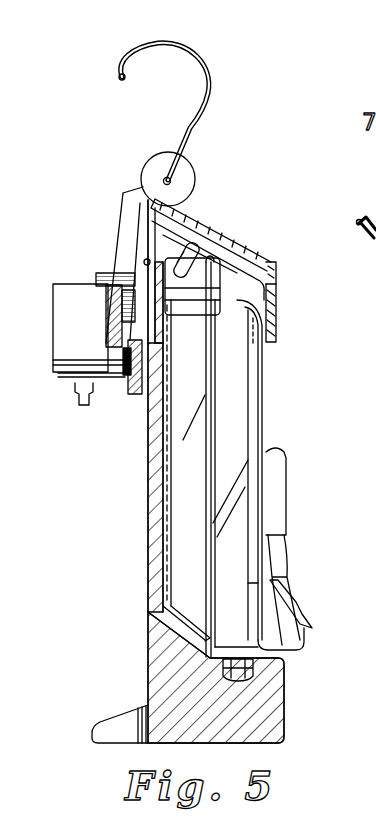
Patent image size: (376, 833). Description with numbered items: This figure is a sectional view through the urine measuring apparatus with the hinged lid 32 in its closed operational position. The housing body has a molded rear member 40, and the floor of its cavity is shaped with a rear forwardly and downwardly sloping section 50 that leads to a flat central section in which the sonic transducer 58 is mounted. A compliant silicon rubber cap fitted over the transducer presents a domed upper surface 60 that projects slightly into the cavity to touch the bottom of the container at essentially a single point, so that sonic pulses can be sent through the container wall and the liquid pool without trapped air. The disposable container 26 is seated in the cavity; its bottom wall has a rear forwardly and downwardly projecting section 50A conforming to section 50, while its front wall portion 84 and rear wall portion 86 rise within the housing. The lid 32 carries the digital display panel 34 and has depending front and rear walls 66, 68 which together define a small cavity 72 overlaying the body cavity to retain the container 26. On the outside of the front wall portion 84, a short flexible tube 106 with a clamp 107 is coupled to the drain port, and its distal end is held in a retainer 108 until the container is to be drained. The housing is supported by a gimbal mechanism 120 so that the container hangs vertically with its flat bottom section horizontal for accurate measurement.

The container 26 is at (256, 401).
The hinged lid 32 is at (203, 212).
The digital display panel 34 is at (231, 240).
The rear member 40 is at (148, 533).
The rear forwardly and downwardly sloping section 50 is at (183, 634).
The rear forwardly and downwardly projecting section 50A is at (167, 609).
The sonic transducer 58 is at (247, 675).
The domed upper surface 60 is at (238, 653).
The front wall 66 is at (278, 312).
The rear wall 68 is at (137, 228).
The small cavity 72 is at (278, 282).
The front wall portion 84 is at (262, 404).
The rear wall portion 86 is at (160, 418).
The flexible tube 106 is at (287, 573).
The clamp 107 is at (312, 621).
The retainer 108 is at (279, 460).
The gimbal mechanism 120 is at (112, 400).